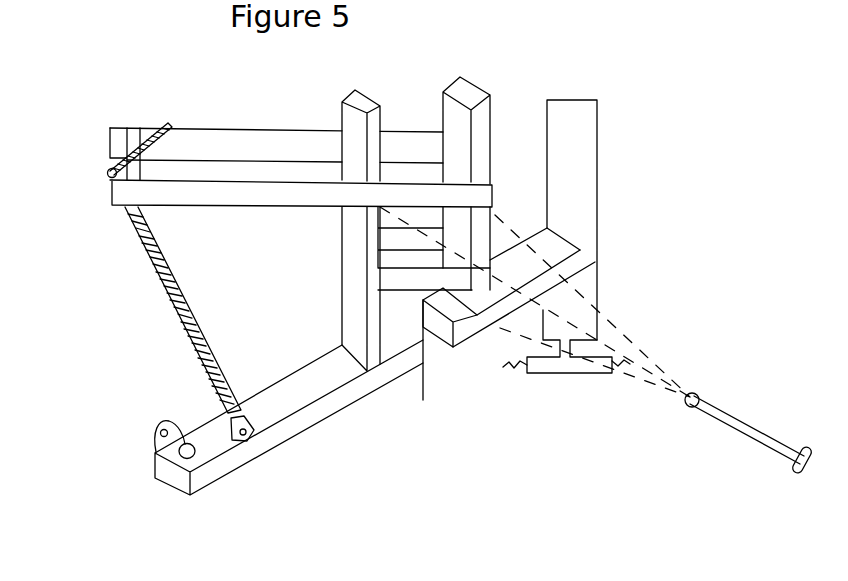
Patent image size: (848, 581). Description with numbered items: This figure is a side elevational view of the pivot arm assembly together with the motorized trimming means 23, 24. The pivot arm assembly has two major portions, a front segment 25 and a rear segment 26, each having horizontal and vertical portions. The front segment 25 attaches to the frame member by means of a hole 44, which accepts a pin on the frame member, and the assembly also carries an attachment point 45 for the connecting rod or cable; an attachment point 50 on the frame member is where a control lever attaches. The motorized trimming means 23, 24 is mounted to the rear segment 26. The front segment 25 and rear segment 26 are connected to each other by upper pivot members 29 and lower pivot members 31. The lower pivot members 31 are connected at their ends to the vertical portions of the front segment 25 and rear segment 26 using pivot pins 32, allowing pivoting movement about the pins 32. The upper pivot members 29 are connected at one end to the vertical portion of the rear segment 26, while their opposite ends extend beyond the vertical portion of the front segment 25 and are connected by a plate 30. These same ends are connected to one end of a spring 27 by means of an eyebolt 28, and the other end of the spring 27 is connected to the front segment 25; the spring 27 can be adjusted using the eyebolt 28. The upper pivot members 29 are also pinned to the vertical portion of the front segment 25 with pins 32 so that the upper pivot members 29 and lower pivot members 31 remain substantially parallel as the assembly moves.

The motorized trimming means 23 is at (606, 167).
The motorized trimming means 24 is at (567, 383).
The front segment 25 is at (306, 443).
The rear segment 26 is at (463, 356).
The spring 27 is at (172, 324).
The eyebolt 28 is at (141, 132).
The upper pivot members 29 is at (244, 170).
The plate 30 is at (117, 149).
The lower pivot members 31 is at (369, 237).
The pivot pins 32 is at (749, 452).
The hole 44 is at (177, 463).
The attachment point 45 is at (162, 437).
The attachment point 50 is at (243, 454).